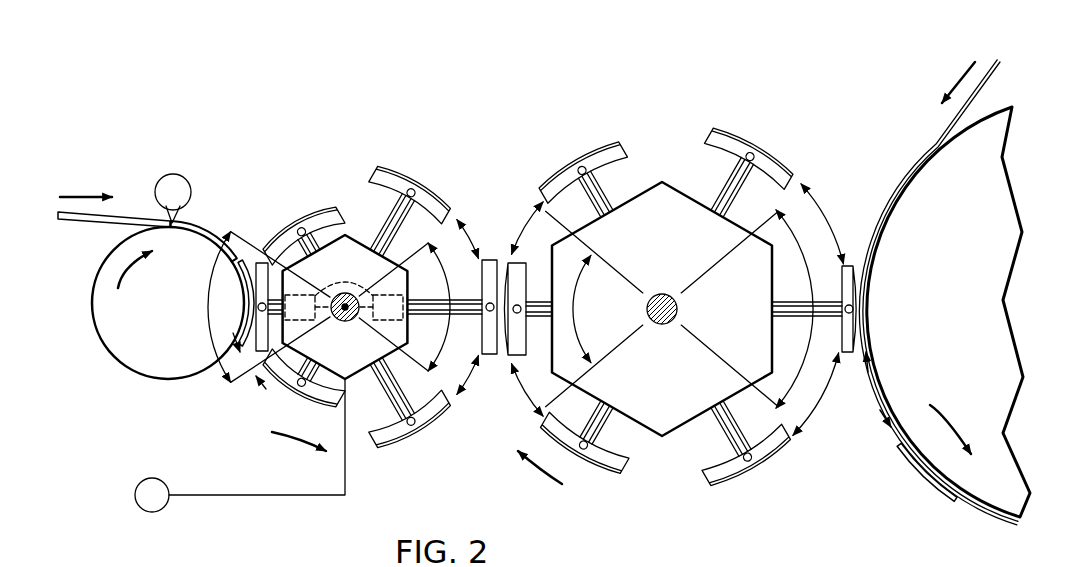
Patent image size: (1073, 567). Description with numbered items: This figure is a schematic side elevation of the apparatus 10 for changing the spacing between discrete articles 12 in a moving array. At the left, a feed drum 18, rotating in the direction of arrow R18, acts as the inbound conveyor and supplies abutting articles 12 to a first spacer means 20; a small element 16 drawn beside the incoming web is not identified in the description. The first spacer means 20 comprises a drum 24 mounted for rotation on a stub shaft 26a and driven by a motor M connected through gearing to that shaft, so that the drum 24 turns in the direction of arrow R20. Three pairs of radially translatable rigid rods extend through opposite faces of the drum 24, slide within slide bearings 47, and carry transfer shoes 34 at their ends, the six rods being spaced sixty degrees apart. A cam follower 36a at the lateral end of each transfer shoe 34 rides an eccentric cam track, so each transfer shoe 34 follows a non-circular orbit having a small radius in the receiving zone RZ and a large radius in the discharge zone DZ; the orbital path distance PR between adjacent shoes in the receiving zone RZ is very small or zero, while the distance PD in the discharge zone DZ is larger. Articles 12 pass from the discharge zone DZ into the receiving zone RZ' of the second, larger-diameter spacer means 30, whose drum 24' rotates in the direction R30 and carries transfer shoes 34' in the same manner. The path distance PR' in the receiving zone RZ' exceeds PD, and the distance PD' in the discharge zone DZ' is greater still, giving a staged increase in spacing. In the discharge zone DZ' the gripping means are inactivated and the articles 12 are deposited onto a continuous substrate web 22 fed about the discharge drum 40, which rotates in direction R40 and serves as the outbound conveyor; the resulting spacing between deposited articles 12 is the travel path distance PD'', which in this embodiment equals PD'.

The apparatus 10 is at (484, 117).
The articles 12 is at (377, 447).
The pressure roller 16 is at (174, 180).
The feed drum 18 is at (128, 353).
The first spacer means 20 is at (333, 176).
The substrate web 22 is at (940, 133).
The drum 24 is at (288, 365).
The drum 24' is at (662, 330).
The stub shaft 26a is at (340, 318).
The second spacer means 30 is at (662, 136).
The transfer shoes 34 is at (384, 299).
The transfer shoes 34' is at (684, 310).
The cam follower 36a is at (413, 427).
The discharge drum 40 is at (1012, 480).
The slide bearings 47 is at (344, 286).
The receiving zone RZ is at (261, 307).
The discharge zone DZ is at (410, 307).
The orbital path distance PD is at (477, 311).
The orbital path distance PR is at (382, 386).
The receiving zone RZ' is at (576, 308).
The discharge zone DZ' is at (802, 309).
The orbital path distance PD' is at (822, 305).
The orbital path distance PR' is at (528, 280).
The travel path distance PD'' is at (881, 442).
The direction of rotation R18 is at (142, 286).
The direction of rotation R20 is at (270, 440).
The direction of rotation R30 is at (545, 487).
The direction of rotation R40 is at (949, 406).
The motor M is at (152, 495).